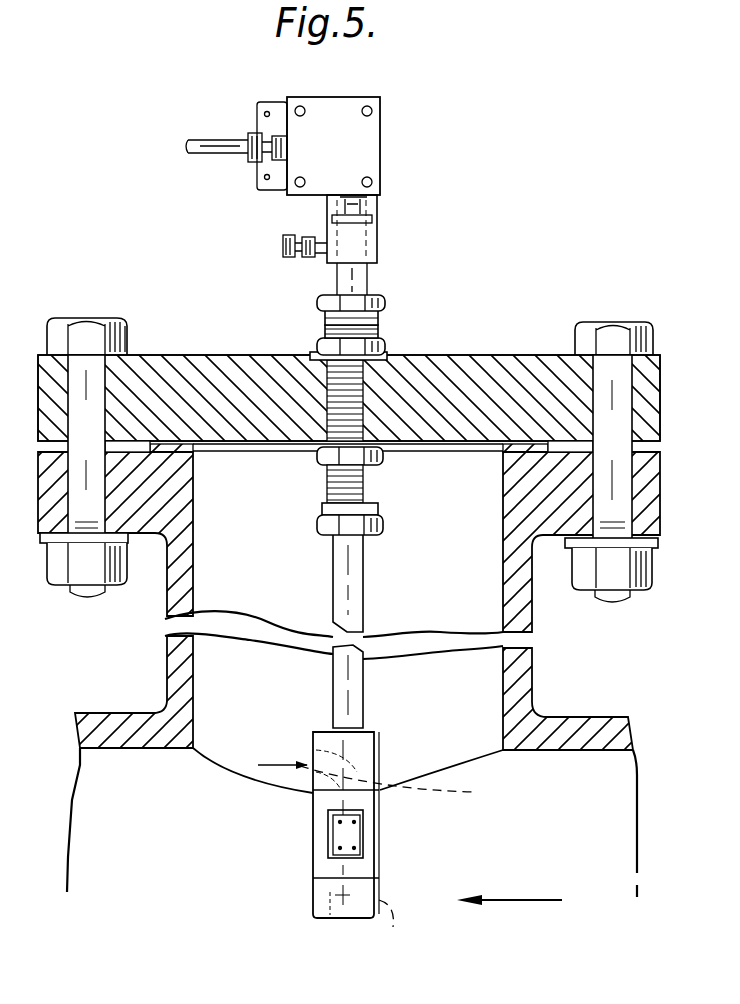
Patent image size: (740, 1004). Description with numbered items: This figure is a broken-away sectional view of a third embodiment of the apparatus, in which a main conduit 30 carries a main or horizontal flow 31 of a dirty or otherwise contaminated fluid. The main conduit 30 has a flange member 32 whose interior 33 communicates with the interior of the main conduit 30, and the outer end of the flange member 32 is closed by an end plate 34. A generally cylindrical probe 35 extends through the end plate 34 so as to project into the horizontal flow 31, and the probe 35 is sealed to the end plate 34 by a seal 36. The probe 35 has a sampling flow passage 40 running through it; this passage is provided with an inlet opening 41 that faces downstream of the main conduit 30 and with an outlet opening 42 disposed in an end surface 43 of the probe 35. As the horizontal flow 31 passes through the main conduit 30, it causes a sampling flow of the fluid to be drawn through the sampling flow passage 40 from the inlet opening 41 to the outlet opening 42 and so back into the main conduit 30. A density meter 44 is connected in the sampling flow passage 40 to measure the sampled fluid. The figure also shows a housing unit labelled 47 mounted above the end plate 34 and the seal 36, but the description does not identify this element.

The main conduit 30 is at (598, 728).
The horizontal flow 31 is at (528, 900).
The flange member 32 is at (650, 518).
The interior 33 is at (480, 680).
The end plate 34 is at (517, 367).
The probe 35 is at (368, 582).
The seal 36 is at (393, 352).
The sampling flow passage 40 is at (415, 787).
The inlet opening 41 is at (313, 769).
The outlet opening 42 is at (378, 935).
The end surface 43 is at (324, 921).
The density meter 44 is at (338, 843).
The transmitter housing 47 is at (358, 150).